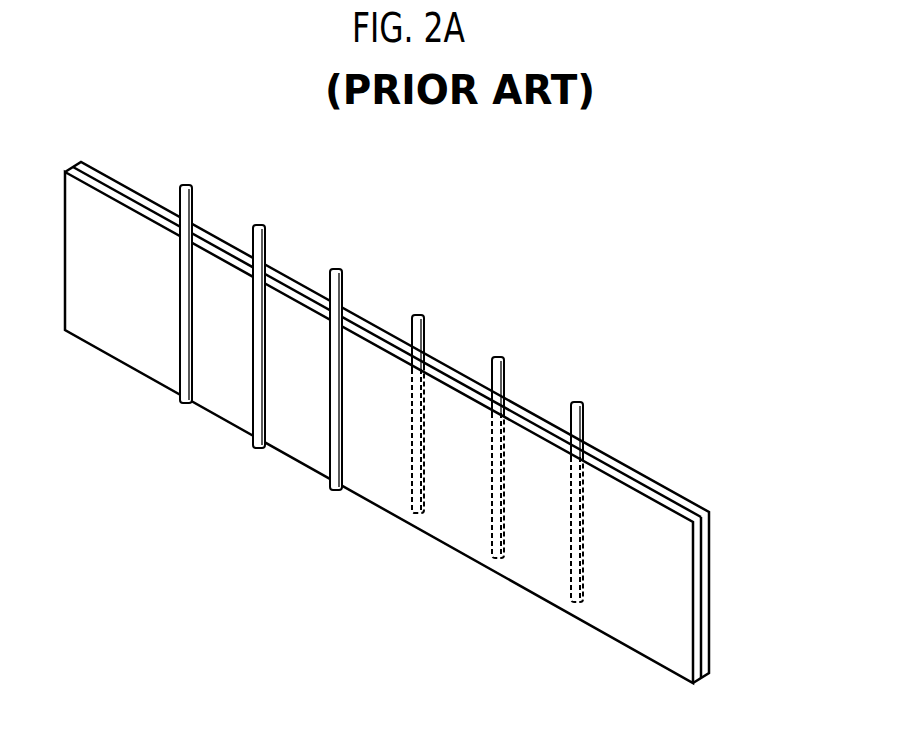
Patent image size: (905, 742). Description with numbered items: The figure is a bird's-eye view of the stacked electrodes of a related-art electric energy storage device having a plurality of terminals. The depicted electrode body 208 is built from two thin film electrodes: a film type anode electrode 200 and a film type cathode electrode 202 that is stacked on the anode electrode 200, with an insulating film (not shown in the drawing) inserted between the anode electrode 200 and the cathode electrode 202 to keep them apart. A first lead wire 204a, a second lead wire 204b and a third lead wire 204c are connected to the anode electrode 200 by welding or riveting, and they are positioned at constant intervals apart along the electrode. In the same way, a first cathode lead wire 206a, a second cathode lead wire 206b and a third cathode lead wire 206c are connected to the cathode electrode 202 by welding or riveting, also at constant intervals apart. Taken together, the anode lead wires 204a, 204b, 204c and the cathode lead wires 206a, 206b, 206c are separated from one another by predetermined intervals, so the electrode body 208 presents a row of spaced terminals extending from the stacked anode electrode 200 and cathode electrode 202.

The film type anode electrode 200 is at (698, 607).
The film type cathode electrode 202 is at (649, 484).
The first lead wire 204a is at (184, 184).
The second lead wire 204b is at (259, 224).
The third lead wire 204c is at (337, 268).
The first cathode lead wire 206a is at (417, 315).
The second cathode lead wire 206b is at (498, 357).
The third cathode lead wire 206c is at (576, 402).
The electrode body 208 is at (641, 292).